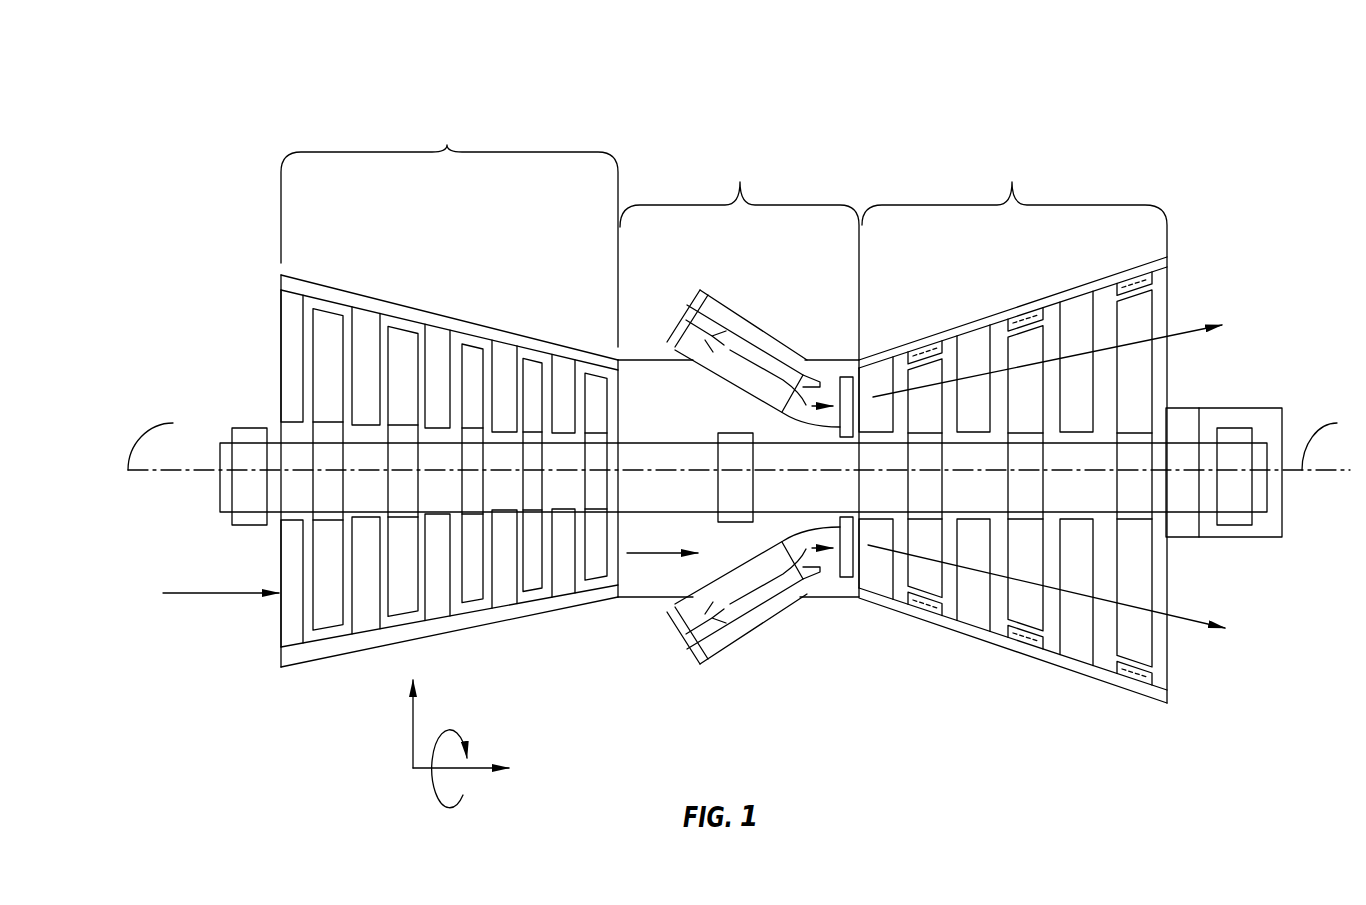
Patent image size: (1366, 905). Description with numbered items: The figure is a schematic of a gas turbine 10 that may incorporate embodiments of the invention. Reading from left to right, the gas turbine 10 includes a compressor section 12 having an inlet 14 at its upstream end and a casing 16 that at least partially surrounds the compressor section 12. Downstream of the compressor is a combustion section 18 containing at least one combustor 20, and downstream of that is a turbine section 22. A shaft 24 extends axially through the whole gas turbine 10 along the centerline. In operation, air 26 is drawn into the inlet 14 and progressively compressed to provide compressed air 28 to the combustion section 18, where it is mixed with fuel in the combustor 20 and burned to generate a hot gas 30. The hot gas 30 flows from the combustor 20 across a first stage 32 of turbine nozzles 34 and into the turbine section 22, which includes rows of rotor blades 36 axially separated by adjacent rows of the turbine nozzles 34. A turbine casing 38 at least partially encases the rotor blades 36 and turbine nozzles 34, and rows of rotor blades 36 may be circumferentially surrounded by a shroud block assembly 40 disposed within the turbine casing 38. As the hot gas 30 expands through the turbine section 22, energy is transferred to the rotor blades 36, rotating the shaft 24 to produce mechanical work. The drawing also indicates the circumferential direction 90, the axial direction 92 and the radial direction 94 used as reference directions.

The gas turbine 10 is at (677, 106).
The compressor section 12 is at (449, 377).
The inlet 14 is at (282, 347).
The casing 16 is at (300, 667).
The combustion section 18 is at (738, 369).
The combustor 20 is at (723, 302).
The turbine section 22 is at (1013, 423).
The shaft 24 is at (1203, 442).
The air 26 is at (223, 593).
The compressed air 28 is at (638, 553).
The hot gas 30 is at (752, 358).
The first stage 32 is at (875, 606).
The turbine nozzles 34 is at (978, 342).
The rotor blades 36 is at (923, 577).
The turbine casing 38 is at (1093, 681).
The shroud block assembly 40 is at (1023, 328).
The circumferential direction 90 is at (433, 788).
The axial direction 92 is at (478, 763).
The radial direction 94 is at (413, 722).